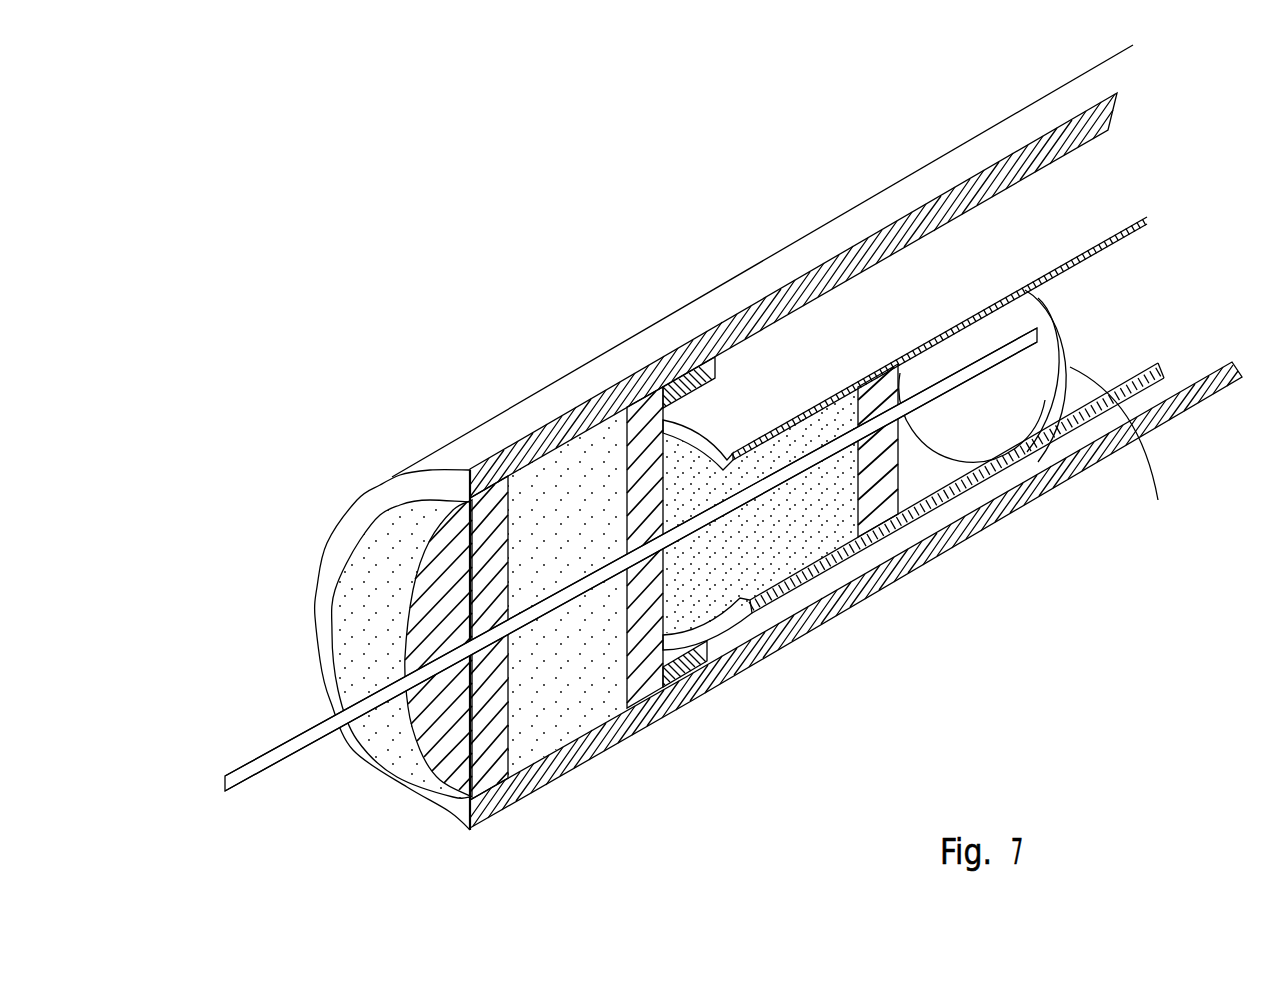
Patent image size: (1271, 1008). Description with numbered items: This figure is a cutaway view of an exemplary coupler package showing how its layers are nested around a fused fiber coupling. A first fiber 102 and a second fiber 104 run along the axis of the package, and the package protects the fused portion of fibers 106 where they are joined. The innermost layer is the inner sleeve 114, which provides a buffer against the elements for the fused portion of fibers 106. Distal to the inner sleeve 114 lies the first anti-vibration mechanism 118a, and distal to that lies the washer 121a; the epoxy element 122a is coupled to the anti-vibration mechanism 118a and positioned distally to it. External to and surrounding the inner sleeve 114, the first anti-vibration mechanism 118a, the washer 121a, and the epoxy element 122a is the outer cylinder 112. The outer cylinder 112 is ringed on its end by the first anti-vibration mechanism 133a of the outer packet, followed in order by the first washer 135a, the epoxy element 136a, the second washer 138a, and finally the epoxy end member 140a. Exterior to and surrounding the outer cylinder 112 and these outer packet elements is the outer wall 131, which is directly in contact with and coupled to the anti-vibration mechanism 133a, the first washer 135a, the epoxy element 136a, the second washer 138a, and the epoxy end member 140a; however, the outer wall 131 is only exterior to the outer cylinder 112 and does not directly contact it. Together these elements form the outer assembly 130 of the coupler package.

The outer assembly 130 is at (420, 266).
The outer cylinder 112 is at (878, 313).
The first anti-vibration mechanism 133a is at (678, 337).
The first washer 135a is at (647, 427).
The epoxy element 136a is at (560, 473).
The second washer 138a is at (490, 482).
The epoxy end member 140a is at (382, 545).
The first fiber 102 is at (250, 755).
The second fiber 104 is at (300, 747).
The fused portion of fibers 106 is at (570, 612).
The epoxy element 122a is at (753, 563).
The washer 121a is at (925, 560).
The outer wall 131 is at (880, 585).
The first anti-vibration mechanism 118a is at (1023, 470).
The inner sleeve 114 is at (1113, 395).